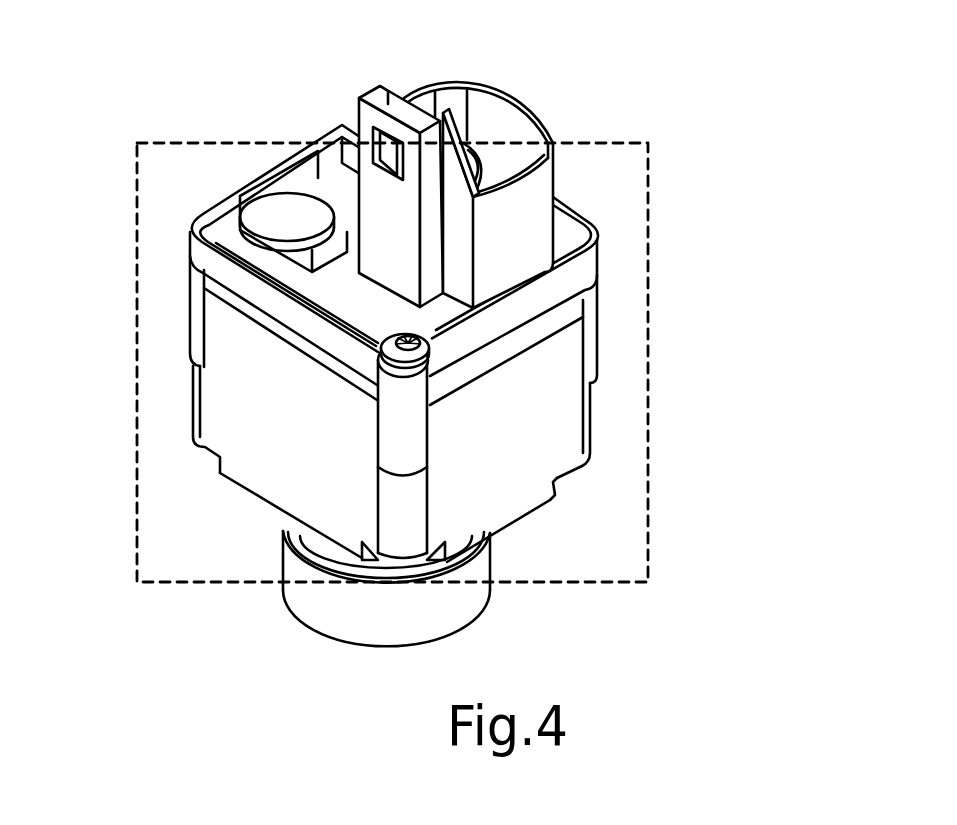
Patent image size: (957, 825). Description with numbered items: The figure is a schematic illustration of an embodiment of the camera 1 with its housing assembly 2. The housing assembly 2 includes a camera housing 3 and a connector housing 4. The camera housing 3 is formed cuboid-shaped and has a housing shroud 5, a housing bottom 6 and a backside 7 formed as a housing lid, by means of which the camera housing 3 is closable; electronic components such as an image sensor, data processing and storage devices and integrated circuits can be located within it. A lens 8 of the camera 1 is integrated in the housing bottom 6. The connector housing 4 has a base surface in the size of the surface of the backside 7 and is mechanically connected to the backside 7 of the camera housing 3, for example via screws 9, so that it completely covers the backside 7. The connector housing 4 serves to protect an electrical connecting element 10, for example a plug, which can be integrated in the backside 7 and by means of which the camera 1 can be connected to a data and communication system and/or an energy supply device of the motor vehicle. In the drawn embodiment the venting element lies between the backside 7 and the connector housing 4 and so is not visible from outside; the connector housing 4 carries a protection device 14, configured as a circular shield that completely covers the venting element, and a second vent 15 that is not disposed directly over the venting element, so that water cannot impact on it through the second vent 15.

The camera 1 is at (624, 105).
The housing assembly 2 is at (650, 398).
The camera housing 3 is at (592, 367).
The connector housing 4 is at (596, 270).
The housing shroud 5 is at (507, 510).
The housing bottom 6 is at (548, 505).
The backside 7 is at (245, 313).
The lens 8 is at (363, 627).
The screws 9 is at (403, 357).
The electrical connecting element 10 is at (478, 145).
The protection device 14 is at (260, 219).
The second vent 15 is at (290, 277).